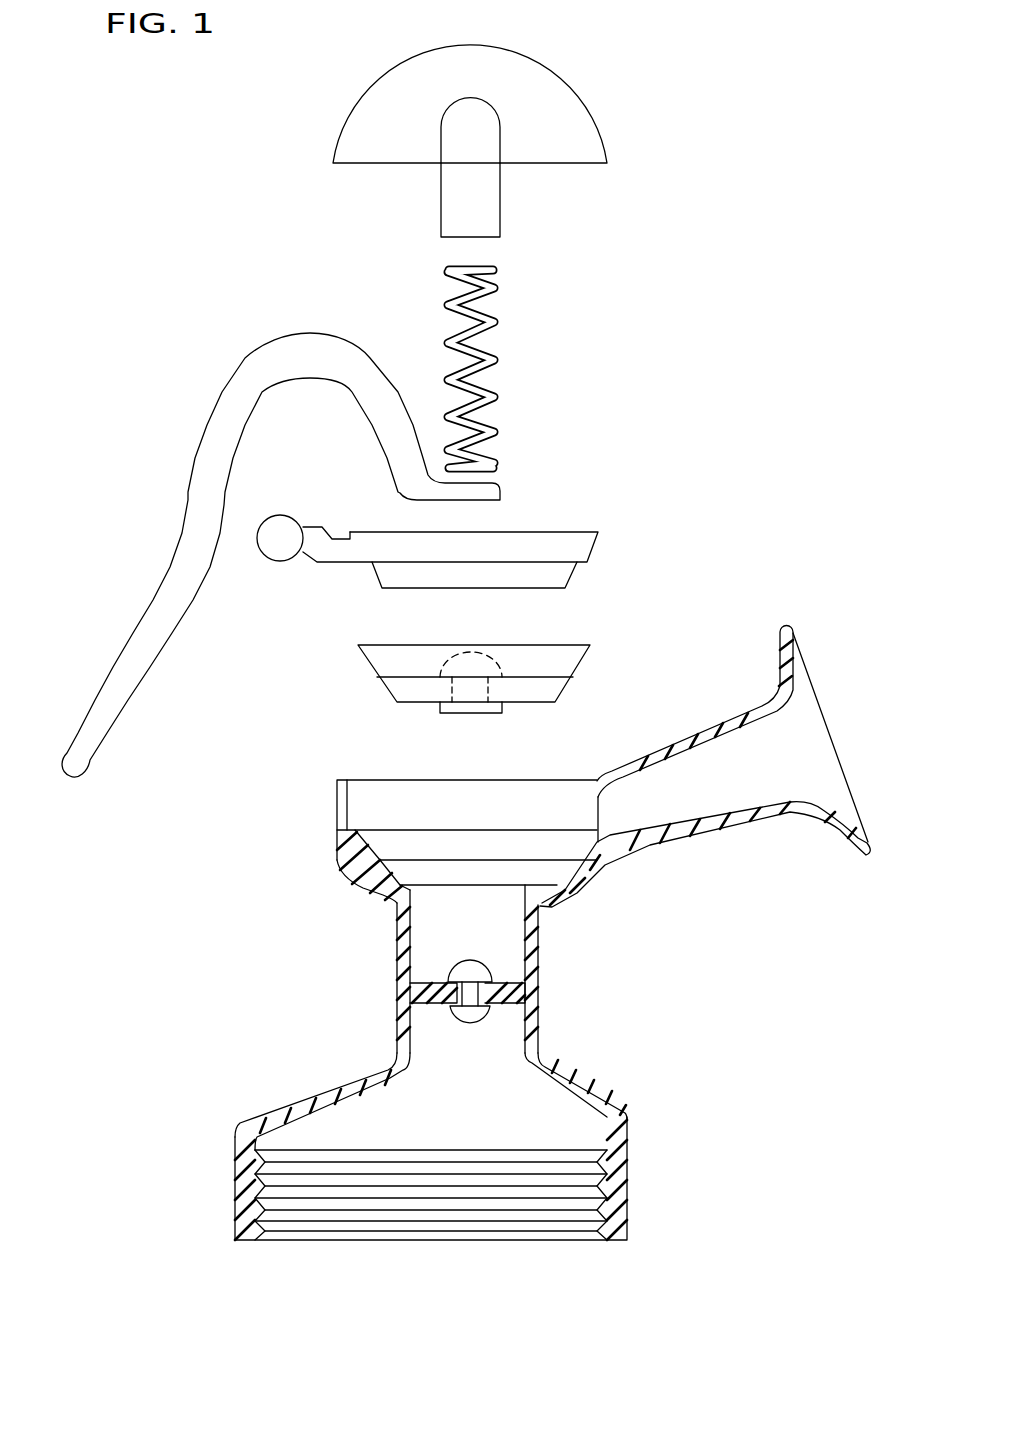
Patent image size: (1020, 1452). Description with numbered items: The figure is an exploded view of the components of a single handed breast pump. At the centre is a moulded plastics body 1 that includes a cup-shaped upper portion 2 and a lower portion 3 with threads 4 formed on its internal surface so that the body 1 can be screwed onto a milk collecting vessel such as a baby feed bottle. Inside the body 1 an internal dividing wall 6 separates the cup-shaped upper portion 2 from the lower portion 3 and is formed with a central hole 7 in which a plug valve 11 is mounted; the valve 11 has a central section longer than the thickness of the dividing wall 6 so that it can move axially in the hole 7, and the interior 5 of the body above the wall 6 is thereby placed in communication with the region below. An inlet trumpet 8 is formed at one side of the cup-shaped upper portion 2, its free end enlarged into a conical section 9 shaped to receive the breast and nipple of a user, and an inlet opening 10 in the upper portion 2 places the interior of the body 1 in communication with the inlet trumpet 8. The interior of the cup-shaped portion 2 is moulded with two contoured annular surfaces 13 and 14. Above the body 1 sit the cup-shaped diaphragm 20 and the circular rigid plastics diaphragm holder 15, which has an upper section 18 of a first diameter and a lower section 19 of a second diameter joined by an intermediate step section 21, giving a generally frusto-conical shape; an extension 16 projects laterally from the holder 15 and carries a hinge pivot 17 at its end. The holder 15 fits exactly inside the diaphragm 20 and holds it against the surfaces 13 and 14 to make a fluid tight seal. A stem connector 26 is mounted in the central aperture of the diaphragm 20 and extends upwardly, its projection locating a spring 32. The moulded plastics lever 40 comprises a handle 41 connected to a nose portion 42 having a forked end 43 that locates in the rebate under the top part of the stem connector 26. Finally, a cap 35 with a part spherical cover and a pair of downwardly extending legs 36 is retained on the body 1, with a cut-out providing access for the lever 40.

The body 1 is at (527, 974).
The cup-shaped upper portion 2 is at (342, 860).
The lower portion 3 is at (242, 1183).
The internal threads 4 is at (292, 1222).
The upper chamber 5 is at (430, 943).
The internal dividing wall 6 is at (430, 1003).
The central hole 7 is at (473, 970).
The inlet trumpet 8 is at (705, 774).
The conical section 9 is at (843, 832).
The inlet opening 10 is at (597, 841).
The plug valve 11 is at (458, 963).
The contoured surface 13 is at (367, 845).
The contoured surface 14 is at (397, 870).
The diaphragm holder 15 is at (474, 557).
The extension 16 is at (342, 564).
The hinge pivot 17 is at (280, 550).
The upper section 18 is at (600, 538).
The lower section 19 is at (578, 566).
The diaphragm 20 is at (448, 702).
The intermediate step section 21 is at (590, 560).
The stem connector 26 is at (490, 688).
The spring 32 is at (505, 328).
The cap 35 is at (580, 118).
The leg 36 is at (488, 220).
The lever 40 is at (306, 555).
The handle 41 is at (97, 703).
The nose portion 42 is at (368, 405).
The forked end 43 is at (505, 490).